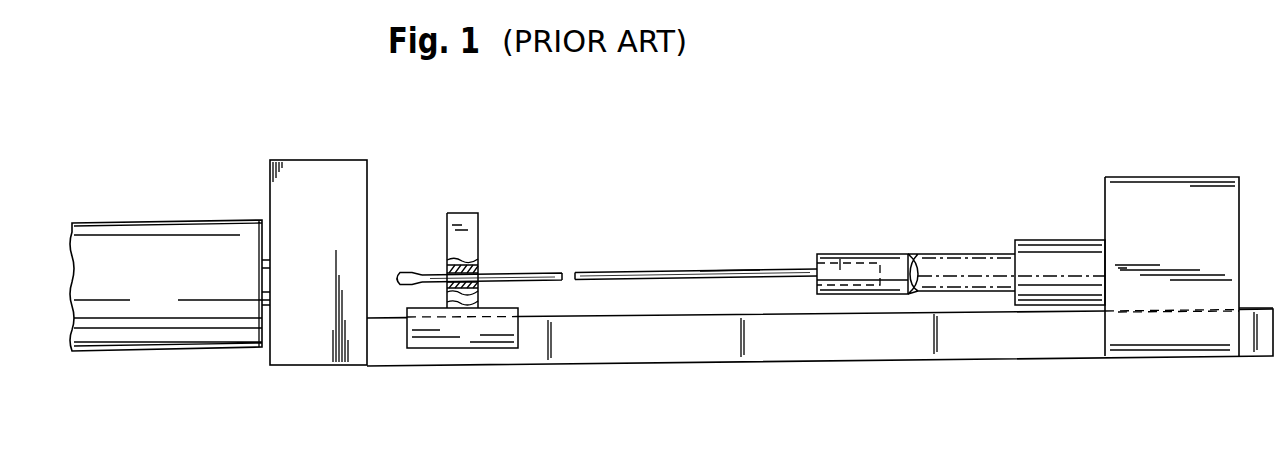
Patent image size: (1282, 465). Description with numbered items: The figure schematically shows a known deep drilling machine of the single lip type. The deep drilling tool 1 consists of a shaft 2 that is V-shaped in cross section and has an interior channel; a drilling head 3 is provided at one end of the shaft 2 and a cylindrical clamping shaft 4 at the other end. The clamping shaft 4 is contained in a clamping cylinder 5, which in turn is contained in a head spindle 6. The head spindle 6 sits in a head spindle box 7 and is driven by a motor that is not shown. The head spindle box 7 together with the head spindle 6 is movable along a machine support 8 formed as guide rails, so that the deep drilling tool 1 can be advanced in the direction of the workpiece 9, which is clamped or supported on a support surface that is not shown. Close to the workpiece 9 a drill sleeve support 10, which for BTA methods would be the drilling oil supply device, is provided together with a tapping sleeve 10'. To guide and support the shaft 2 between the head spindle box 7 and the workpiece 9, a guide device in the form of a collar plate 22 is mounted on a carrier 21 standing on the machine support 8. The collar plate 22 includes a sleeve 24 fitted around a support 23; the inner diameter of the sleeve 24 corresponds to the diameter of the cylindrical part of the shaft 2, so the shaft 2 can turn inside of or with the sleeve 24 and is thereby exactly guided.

The deep drilling tool 1 is at (733, 268).
The shaft 2 is at (665, 272).
The drilling head 3 is at (410, 271).
The cylindrical clamping shaft 4 is at (838, 261).
The clamping cylinder 5 is at (895, 262).
The head spindle 6 is at (1031, 258).
The head spindle box 7 is at (1140, 186).
The machine support 8 is at (859, 360).
The workpiece 9 is at (176, 235).
The drill sleeve support 10 is at (318, 244).
The tapping sleeve 10' is at (249, 233).
The carrier 21 is at (461, 340).
The collar plate 22 is at (458, 212).
The support 23 is at (472, 248).
The sleeve 24 is at (480, 270).